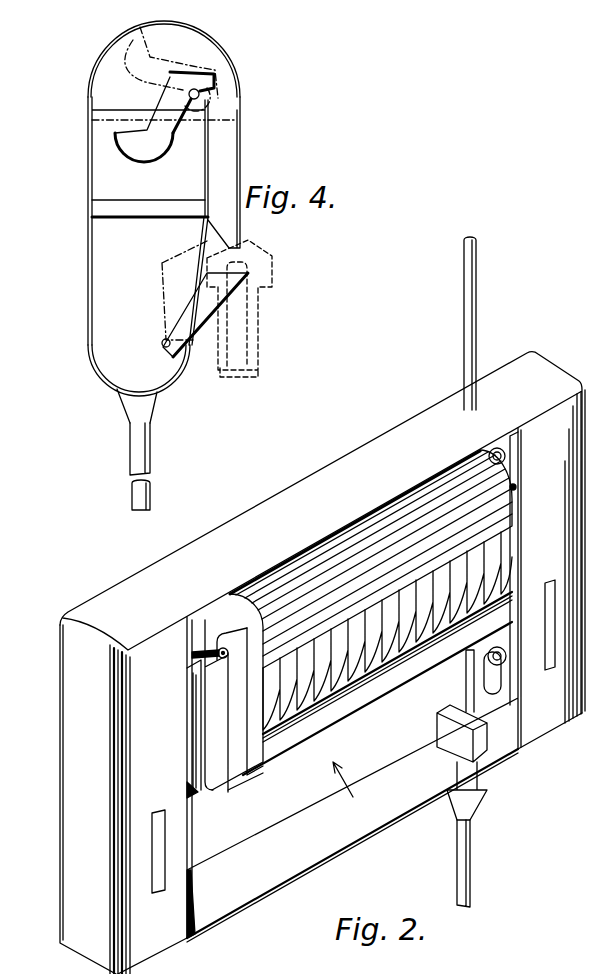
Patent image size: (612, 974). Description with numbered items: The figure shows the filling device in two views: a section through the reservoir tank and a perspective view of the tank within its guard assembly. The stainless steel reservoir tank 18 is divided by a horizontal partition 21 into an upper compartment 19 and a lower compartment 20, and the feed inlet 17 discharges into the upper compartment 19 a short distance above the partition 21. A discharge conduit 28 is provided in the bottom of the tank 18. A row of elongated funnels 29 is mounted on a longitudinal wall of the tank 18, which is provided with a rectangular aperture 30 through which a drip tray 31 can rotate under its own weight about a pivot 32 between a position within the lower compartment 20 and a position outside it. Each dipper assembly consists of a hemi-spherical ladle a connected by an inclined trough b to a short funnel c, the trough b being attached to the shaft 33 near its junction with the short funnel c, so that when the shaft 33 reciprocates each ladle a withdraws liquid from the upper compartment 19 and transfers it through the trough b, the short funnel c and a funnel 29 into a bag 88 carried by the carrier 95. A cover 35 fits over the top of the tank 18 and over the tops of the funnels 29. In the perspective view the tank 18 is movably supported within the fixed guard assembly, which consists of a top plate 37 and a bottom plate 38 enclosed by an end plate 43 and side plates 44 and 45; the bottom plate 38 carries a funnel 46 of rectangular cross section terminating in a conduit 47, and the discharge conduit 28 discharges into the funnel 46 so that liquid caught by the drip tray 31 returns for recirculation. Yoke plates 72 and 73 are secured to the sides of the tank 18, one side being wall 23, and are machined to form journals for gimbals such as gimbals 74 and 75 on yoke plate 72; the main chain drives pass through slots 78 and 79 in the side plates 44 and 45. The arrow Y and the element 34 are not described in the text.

In FIG. 2, the feed inlet 17 is at (477, 316).
In FIG. 4, the reservoir tank 18 is at (90, 187).
In FIG. 2, the reservoir tank 18 is at (407, 692).
In FIG. 4, the upper compartment 19 is at (123, 165).
In FIG. 4, the lower compartment 20 is at (118, 272).
In FIG. 4, the horizontal partition 21 is at (147, 218).
In FIG. 2, the side wall 23 is at (213, 700).
In FIG. 4, the discharge conduit 28 is at (147, 460).
In FIG. 2, the discharge conduit 28 is at (464, 676).
In FIG. 4, the elongated funnels 29 is at (240, 163).
In FIG. 2, the elongated funnels 29 is at (297, 675).
In FIG. 4, the rectangular aperture 30 is at (245, 330).
In FIG. 4, the drip tray 31 is at (173, 290).
In FIG. 2, the drip tray 31 is at (252, 745).
In FIG. 4, the pivot 32 is at (162, 344).
In FIG. 4, the shaft 33 is at (200, 96).
In FIG. 2, the shaft 33 is at (192, 655).
In FIG. 2, the pin 34 is at (208, 677).
In FIG. 4, the cover 35 is at (170, 22).
In FIG. 2, the cover 35 is at (220, 620).
In FIG. 2, the top plate 37 is at (322, 472).
In FIG. 2, the bottom plate 38 is at (313, 852).
In FIG. 2, the end plate 43 is at (95, 799).
In FIG. 2, the side plate 44 is at (165, 940).
In FIG. 2, the side plate 45 is at (560, 556).
In FIG. 2, the funnel 46 is at (488, 794).
In FIG. 2, the conduit 47 is at (471, 848).
In FIG. 2, the yoke plate 72 is at (513, 468).
In FIG. 2, the yoke plate 73 is at (197, 737).
In FIG. 2, the gimbal 74 is at (506, 665).
In FIG. 2, the gimbal 75 is at (492, 454).
In FIG. 2, the slot 78 is at (152, 827).
In FIG. 2, the slot 79 is at (547, 597).
In FIG. 4, the bag 88 is at (240, 355).
In FIG. 4, the carrier 95 is at (260, 373).
In FIG. 4, the hemi-spherical ladle a is at (143, 148).
In FIG. 4, the trough b is at (183, 122).
In FIG. 4, the short funnel c is at (197, 70).
In FIG. 2, the direction arrow Y is at (350, 785).